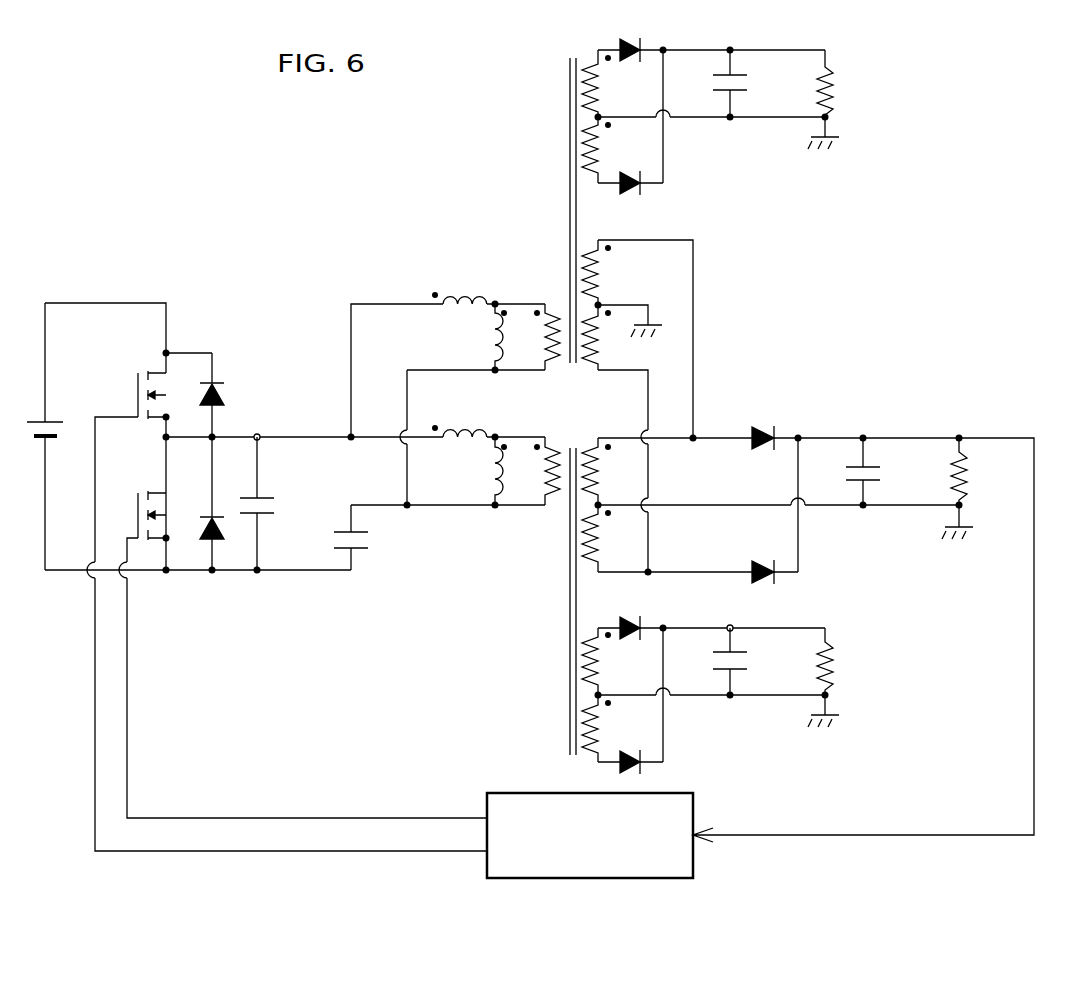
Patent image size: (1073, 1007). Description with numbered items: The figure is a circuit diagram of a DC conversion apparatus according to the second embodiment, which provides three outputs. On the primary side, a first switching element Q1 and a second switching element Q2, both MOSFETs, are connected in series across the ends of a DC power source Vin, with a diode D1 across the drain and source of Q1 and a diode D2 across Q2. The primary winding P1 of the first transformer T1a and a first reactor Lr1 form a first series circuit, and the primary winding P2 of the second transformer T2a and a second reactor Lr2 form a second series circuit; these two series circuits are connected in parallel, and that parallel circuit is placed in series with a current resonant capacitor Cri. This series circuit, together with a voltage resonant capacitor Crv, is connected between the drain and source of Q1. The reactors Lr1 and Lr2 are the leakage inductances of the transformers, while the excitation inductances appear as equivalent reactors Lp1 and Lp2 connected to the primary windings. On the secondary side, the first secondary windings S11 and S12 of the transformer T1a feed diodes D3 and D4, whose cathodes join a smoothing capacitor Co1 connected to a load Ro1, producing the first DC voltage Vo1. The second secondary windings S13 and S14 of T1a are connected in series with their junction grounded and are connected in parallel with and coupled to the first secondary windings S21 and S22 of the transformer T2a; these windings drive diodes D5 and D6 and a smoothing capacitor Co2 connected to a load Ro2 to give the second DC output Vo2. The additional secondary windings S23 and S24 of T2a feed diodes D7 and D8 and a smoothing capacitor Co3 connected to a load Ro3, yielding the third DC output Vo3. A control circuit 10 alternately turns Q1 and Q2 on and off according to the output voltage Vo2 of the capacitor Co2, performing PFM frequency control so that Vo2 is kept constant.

The control circuit 10 is at (533, 793).
The DC power source Vin is at (56, 436).
The first switching element Q1 is at (141, 501).
The second switching element Q2 is at (141, 380).
The diode D1 is at (222, 503).
The diode D2 is at (222, 395).
The voltage resonant capacitor Crv is at (277, 503).
The current resonant capacitor Cri is at (368, 537).
The first reactor Lr1 is at (459, 282).
The second reactor Lr2 is at (459, 415).
The equivalent reactor Lp1 is at (482, 337).
The equivalent reactor Lp2 is at (482, 471).
The primary winding P1 is at (540, 337).
The primary winding P2 is at (540, 471).
The first transformer T1a is at (577, 196).
The second transformer T2a is at (573, 587).
The first secondary winding S11 is at (609, 83).
The first secondary winding S12 is at (609, 150).
The second secondary winding S13 is at (609, 272).
The second secondary winding S14 is at (609, 337).
The first secondary winding S21 is at (609, 471).
The first secondary winding S22 is at (609, 538).
The secondary winding S23 is at (609, 661).
The secondary winding S24 is at (609, 728).
The diode D3 is at (630, 38).
The diode D4 is at (630, 197).
The diode D5 is at (764, 425).
The diode D6 is at (764, 586).
The diode D7 is at (629, 614).
The diode D8 is at (646, 769).
The smoothing capacitor Co1 is at (750, 83).
The smoothing capacitor Co2 is at (884, 471).
The smoothing capacitor Co3 is at (750, 661).
The load Ro1 is at (847, 83).
The load Ro2 is at (981, 471).
The load Ro3 is at (847, 661).
The first DC voltage Vo1 is at (733, 48).
The second DC output Vo2 is at (863, 432).
The third DC output Vo3 is at (731, 627).